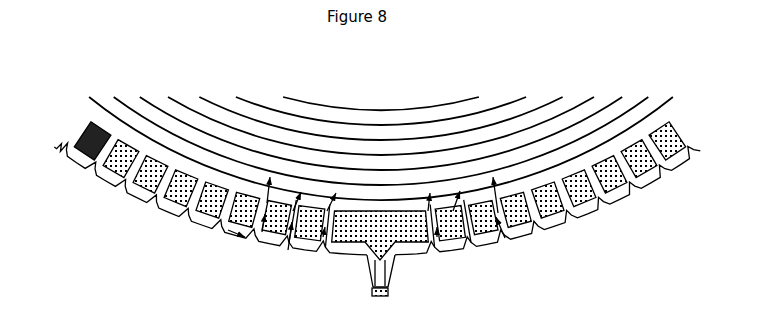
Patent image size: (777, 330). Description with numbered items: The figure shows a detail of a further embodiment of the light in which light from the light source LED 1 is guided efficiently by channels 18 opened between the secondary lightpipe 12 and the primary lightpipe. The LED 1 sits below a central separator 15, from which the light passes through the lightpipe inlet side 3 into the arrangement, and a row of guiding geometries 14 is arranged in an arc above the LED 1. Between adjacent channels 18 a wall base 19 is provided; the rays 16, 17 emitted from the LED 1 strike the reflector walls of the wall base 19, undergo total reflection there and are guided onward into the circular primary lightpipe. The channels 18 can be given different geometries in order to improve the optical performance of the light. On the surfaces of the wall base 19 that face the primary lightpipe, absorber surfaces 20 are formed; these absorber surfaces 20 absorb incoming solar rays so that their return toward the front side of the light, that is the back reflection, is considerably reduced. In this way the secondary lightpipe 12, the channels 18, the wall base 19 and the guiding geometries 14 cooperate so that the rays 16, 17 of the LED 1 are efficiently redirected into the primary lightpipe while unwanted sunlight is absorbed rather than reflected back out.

The light source LED 1 is at (390, 295).
The lightpipe inlet side 3 is at (126, 118).
The secondary lightpipe 12 is at (75, 157).
The guiding geometries 14 is at (122, 187).
The separator 15 is at (367, 237).
The ray 16 is at (470, 222).
The ray 17 is at (515, 237).
The channel 18 is at (162, 187).
The wall base 19 is at (90, 120).
The absorber surface on the wall base 20 is at (667, 118).